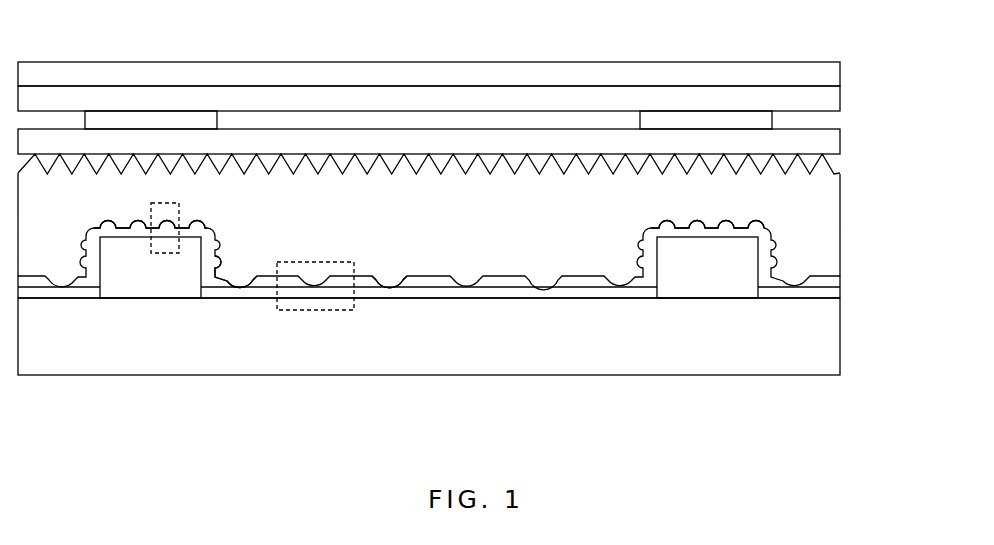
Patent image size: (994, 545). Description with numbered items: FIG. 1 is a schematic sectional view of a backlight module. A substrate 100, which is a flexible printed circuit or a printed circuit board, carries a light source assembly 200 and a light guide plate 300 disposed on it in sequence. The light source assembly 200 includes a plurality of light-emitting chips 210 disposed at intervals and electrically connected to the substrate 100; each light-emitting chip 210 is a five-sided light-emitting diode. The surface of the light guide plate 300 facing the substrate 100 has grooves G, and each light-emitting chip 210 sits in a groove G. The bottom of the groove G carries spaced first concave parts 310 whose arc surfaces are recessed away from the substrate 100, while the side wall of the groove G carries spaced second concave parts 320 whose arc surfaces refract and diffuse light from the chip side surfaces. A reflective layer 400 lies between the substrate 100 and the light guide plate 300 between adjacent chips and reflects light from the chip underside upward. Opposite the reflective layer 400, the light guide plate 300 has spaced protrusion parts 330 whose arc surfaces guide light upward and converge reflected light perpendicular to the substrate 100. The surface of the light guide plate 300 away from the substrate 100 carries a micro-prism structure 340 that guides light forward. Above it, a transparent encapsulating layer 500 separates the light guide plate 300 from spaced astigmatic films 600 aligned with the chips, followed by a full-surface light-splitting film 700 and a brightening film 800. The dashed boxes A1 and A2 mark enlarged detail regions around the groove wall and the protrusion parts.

The substrate 100 is at (808, 348).
The light source assembly 200 is at (429, 343).
The light-emitting chip 210 is at (690, 263).
The light guide plate 300 is at (808, 239).
The first concave part 310 is at (137, 227).
The second concave part 320 is at (215, 270).
The protrusion part 330 is at (393, 283).
The micro-prism structure 340 is at (545, 162).
The reflective layer 400 is at (808, 295).
The transparent encapsulating layer 500 is at (808, 141).
The astigmatic film 600 is at (142, 122).
The light-splitting film 700 is at (808, 103).
The brightening film 800 is at (808, 72).
The groove G is at (707, 228).
The region A1 is at (181, 211).
The region A2 is at (332, 262).